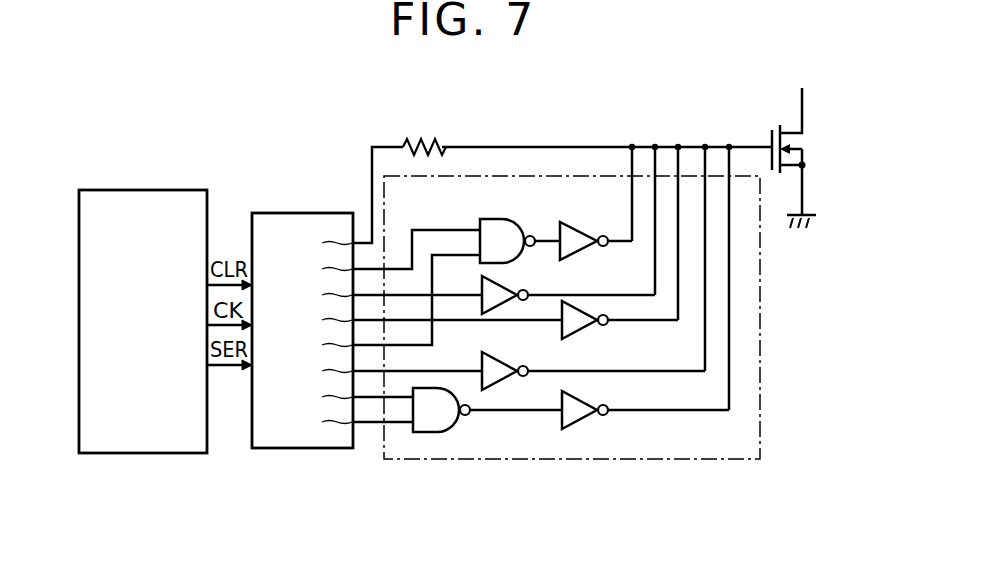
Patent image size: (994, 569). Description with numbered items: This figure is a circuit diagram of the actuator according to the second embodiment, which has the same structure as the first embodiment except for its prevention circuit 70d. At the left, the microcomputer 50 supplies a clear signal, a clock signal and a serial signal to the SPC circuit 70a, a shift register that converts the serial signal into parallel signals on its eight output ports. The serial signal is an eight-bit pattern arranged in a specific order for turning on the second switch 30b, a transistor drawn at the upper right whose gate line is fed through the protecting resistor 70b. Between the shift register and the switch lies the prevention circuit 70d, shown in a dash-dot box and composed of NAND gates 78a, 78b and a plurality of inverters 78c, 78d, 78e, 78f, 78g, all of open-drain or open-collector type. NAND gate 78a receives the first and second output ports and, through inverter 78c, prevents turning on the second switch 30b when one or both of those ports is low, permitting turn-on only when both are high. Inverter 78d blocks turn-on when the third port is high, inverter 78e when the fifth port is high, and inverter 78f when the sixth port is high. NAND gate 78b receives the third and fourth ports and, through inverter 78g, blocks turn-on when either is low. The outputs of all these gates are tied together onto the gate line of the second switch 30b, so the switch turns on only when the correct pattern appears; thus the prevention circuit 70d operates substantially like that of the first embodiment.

The microcomputer 50 is at (176, 190).
The SPC circuit 70a is at (297, 213).
The protecting resistor 70b is at (428, 138).
The prevention circuit 70d is at (765, 305).
The NAND gate 78a is at (435, 432).
The NAND gate 78b is at (497, 219).
The inverter 78c is at (578, 428).
The inverter 78d is at (503, 390).
The inverter 78e is at (583, 328).
The inverter 78f is at (498, 284).
The inverter 78g is at (572, 222).
The second switch 30b is at (802, 142).